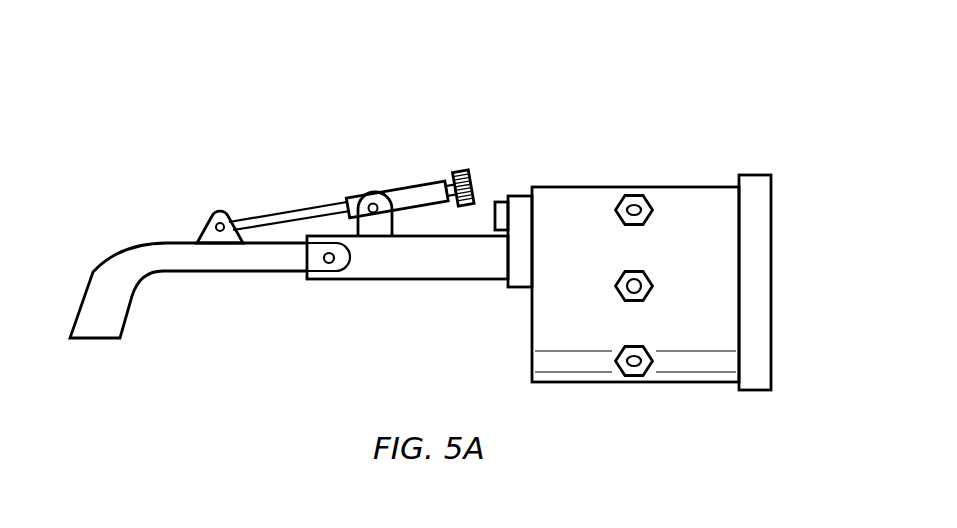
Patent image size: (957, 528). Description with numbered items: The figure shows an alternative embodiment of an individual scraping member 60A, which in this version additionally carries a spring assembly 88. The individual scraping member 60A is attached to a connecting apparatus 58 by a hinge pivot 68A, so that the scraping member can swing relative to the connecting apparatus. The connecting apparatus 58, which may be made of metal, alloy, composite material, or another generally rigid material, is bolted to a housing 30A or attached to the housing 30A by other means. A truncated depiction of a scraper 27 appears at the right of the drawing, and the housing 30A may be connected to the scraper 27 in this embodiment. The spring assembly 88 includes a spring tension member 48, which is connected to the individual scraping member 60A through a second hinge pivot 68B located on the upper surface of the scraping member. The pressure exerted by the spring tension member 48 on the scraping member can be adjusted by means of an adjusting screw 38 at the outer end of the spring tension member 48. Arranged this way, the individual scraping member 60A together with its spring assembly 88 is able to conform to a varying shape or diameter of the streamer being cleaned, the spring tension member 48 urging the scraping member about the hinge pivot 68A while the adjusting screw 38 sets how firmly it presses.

The scraper 27 is at (786, 304).
The housing 30A is at (630, 164).
The adjusting screw 38 is at (460, 173).
The spring tension member 48 is at (420, 190).
The connecting apparatus 58 is at (413, 282).
The individual scraping member 60A is at (217, 264).
The hinge pivot 68A is at (331, 264).
The hinge pivot 68B is at (210, 214).
The spring assembly 88 is at (306, 140).